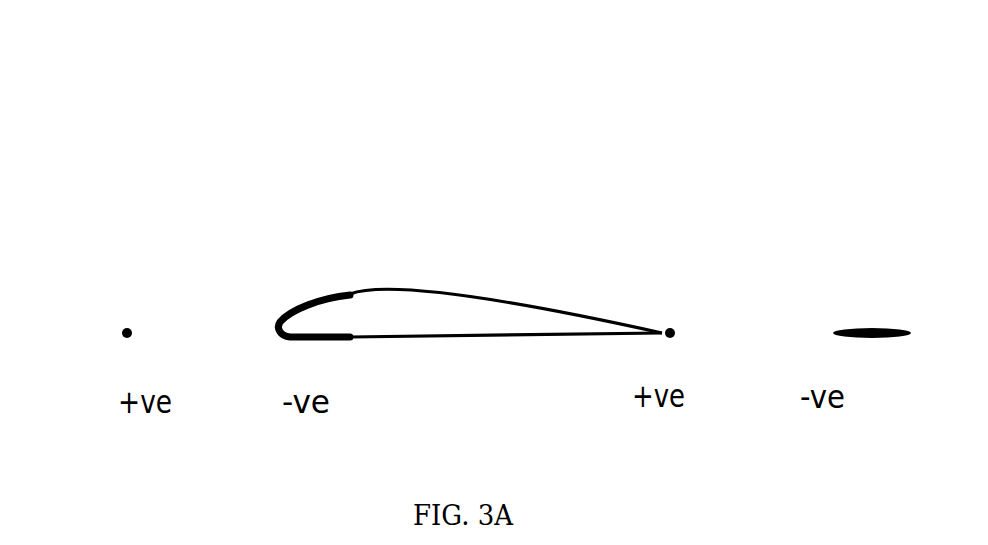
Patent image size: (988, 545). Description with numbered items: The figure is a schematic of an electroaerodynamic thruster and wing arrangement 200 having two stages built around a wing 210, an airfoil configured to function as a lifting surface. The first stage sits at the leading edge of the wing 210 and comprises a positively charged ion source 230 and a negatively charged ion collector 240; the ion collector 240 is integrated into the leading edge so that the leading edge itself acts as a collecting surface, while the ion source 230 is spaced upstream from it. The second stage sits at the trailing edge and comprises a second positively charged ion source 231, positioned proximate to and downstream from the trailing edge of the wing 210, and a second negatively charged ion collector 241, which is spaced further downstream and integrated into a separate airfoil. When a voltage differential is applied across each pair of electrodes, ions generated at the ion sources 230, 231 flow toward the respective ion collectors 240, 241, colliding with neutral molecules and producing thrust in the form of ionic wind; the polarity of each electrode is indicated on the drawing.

The electroaerodynamic thruster and wing arrangement 200 is at (125, 185).
The wing 210 is at (453, 293).
The ion source 230 is at (128, 329).
The second ion source 231 is at (668, 328).
The ion collector 240 is at (312, 303).
The second ion collector 241 is at (870, 329).